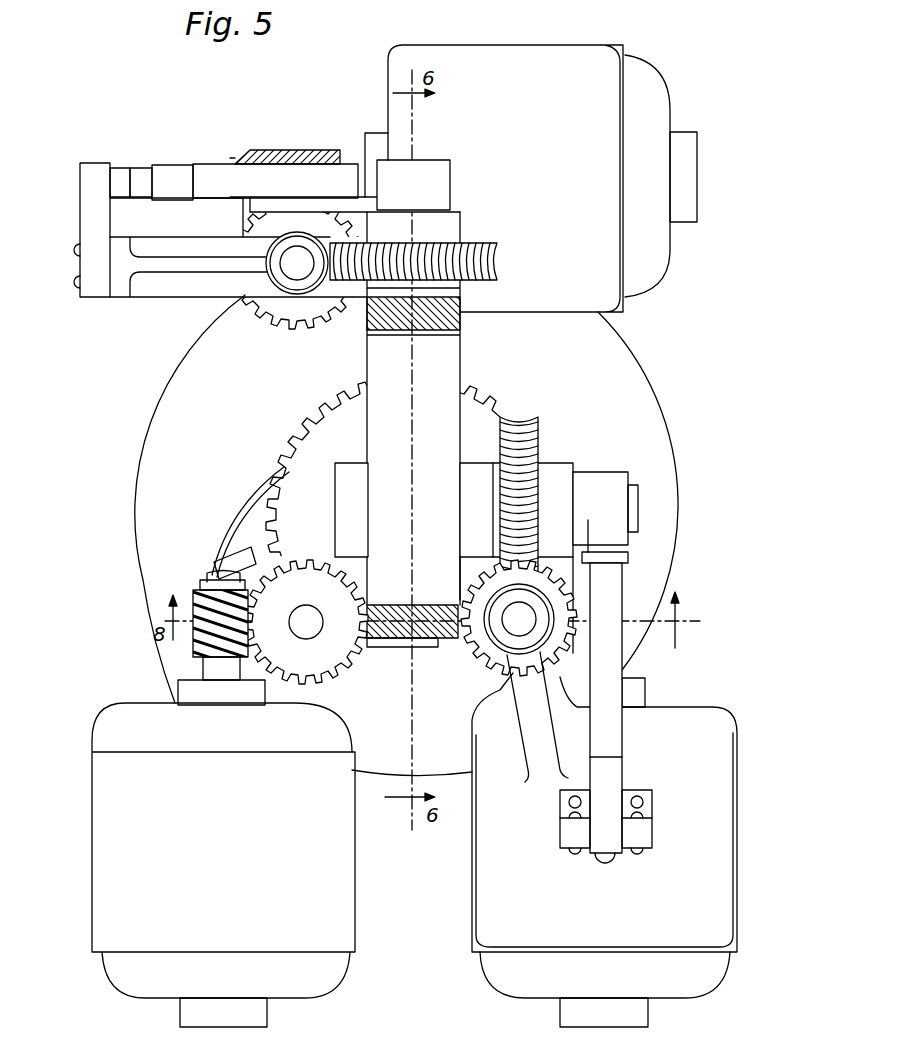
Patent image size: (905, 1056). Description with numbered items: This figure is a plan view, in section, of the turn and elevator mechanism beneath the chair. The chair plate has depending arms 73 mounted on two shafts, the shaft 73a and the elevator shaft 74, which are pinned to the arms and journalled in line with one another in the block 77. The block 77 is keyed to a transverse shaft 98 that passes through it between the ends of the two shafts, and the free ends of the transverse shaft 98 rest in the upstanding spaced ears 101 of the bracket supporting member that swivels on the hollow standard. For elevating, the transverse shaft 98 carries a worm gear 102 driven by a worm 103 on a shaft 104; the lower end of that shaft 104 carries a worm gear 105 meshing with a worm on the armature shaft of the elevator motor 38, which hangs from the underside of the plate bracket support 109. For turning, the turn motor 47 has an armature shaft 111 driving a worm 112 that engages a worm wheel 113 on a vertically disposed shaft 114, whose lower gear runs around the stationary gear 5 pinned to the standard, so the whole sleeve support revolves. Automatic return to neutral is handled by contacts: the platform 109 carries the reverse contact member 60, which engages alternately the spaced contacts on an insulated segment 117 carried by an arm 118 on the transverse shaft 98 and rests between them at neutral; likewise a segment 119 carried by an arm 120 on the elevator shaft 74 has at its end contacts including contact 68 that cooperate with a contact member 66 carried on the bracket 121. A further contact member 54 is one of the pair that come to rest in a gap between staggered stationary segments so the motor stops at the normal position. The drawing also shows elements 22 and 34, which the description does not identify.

The gear 5 is at (342, 412).
The lever arm 22 is at (227, 562).
The upper housing 34 is at (648, 64).
The elevator motor 38 is at (488, 984).
The turn motor 47 is at (107, 861).
The contact member 54 is at (259, 478).
The reverse contact member 60 is at (613, 773).
The contact member 66 is at (140, 168).
The contact 68 is at (188, 138).
The depending arms 73 is at (416, 328).
The shaft 73a is at (393, 648).
The shaft 74 is at (434, 152).
The block 77 is at (448, 363).
The transverse shaft 98 is at (640, 508).
The upstanding spaced ears 101 is at (300, 553).
The worm gear 102 is at (532, 444).
The worm 103 is at (510, 590).
The shaft 104 is at (519, 619).
The worm gear 105 is at (488, 658).
The plate bracket support 109 is at (740, 790).
The armature shaft 111 is at (210, 572).
The worm 112 is at (196, 590).
The worm wheel 113 is at (306, 622).
The vertically disposed shaft 114 is at (297, 614).
The insulated segment 117 is at (609, 713).
The arm 118 is at (612, 554).
The segment 119 is at (222, 168).
The arm 120 is at (292, 206).
The bracket 121 is at (88, 228).